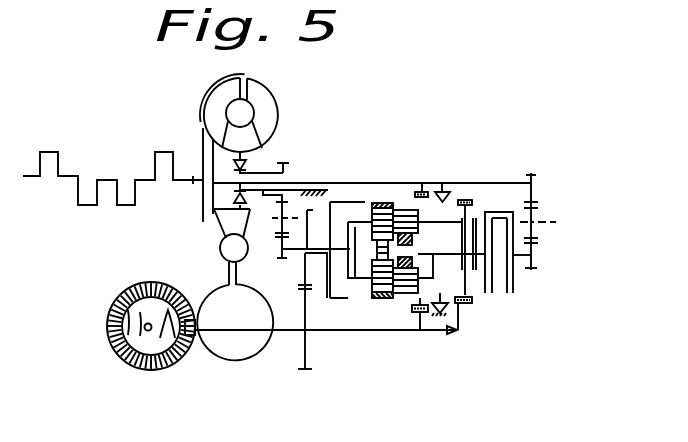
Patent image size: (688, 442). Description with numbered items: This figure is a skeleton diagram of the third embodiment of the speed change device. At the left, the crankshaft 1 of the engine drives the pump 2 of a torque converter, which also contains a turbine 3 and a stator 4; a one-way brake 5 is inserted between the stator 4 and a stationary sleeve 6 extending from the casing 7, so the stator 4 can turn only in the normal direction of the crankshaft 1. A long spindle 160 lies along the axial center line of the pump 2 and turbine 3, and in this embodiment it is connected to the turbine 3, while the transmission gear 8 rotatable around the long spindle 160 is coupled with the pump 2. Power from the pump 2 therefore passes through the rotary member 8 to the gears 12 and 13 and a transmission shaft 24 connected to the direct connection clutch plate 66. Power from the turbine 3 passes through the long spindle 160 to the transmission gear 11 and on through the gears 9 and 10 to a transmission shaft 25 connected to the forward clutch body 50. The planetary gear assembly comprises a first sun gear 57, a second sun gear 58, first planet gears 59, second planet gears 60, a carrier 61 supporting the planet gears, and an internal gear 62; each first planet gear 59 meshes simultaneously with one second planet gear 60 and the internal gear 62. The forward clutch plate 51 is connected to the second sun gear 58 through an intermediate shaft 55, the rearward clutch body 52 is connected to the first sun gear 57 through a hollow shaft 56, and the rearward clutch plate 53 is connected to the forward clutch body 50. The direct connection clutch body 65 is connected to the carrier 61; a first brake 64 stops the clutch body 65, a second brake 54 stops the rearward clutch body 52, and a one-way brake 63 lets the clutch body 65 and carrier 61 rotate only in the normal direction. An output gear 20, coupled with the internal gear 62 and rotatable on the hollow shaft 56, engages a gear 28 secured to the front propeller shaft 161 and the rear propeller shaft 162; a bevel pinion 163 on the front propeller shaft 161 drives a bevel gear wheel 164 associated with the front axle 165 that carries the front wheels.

The crankshaft 1 is at (180, 185).
The pump 2 is at (263, 107).
The turbine 3 is at (222, 100).
The stator 4 is at (237, 142).
The one-way brake 5 is at (237, 162).
The stationary sleeve 6 is at (285, 196).
The casing 7 is at (318, 188).
The transmission gear 8 is at (283, 163).
The gear 9 is at (537, 212).
The gear 10 is at (535, 257).
The transmission gear 11 is at (537, 182).
The gear 12 is at (290, 213).
The gear 13 is at (262, 270).
The output gear 20 is at (300, 290).
The transmission shaft 24 is at (290, 275).
The transmission shaft 25 is at (513, 270).
The gear 28 is at (300, 362).
The forward clutch body 50 is at (507, 297).
The forward clutch plate 51 is at (500, 297).
The rearward clutch body 52 is at (470, 293).
The rearward clutch plate 53 is at (460, 305).
The second brake 54 is at (467, 305).
The intermediate shaft 55 is at (487, 212).
The hollow shaft 56 is at (448, 200).
The first sun gear 57 is at (456, 215).
The second sun gear 58 is at (370, 293).
The first planet gears 59 is at (422, 191).
The second planet gears 60 is at (385, 205).
The carrier 61 is at (350, 222).
The internal gear 62 is at (378, 203).
The one-way brake 63 is at (437, 317).
The first brake 64 is at (420, 313).
The direct connection clutch body 65 is at (332, 290).
The direct connection clutch plate 66 is at (362, 300).
The long spindle 160 is at (425, 200).
The front propeller shaft 161 is at (238, 333).
The rear propeller shaft 162 is at (345, 300).
The bevel pinion 163 is at (196, 335).
The bevel gear wheel 164 is at (115, 362).
The front axle 165 is at (147, 323).